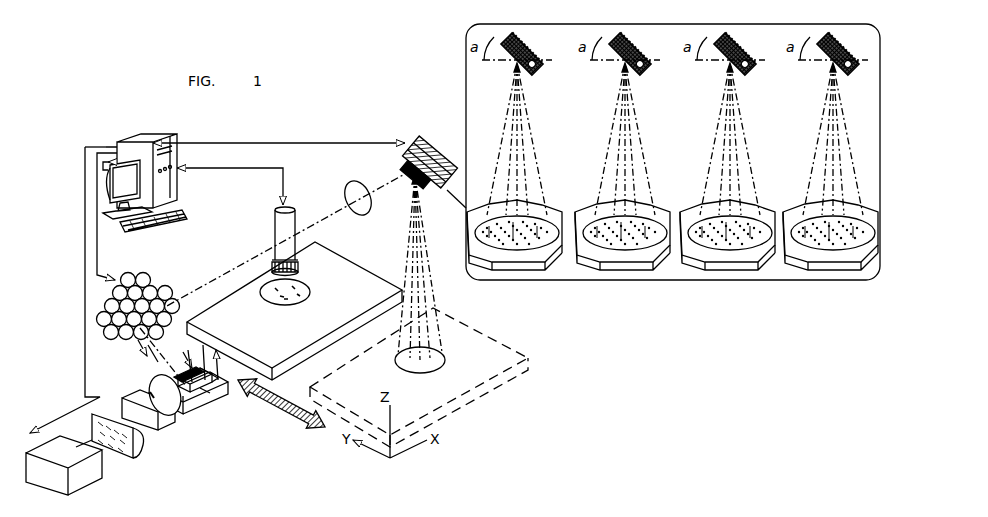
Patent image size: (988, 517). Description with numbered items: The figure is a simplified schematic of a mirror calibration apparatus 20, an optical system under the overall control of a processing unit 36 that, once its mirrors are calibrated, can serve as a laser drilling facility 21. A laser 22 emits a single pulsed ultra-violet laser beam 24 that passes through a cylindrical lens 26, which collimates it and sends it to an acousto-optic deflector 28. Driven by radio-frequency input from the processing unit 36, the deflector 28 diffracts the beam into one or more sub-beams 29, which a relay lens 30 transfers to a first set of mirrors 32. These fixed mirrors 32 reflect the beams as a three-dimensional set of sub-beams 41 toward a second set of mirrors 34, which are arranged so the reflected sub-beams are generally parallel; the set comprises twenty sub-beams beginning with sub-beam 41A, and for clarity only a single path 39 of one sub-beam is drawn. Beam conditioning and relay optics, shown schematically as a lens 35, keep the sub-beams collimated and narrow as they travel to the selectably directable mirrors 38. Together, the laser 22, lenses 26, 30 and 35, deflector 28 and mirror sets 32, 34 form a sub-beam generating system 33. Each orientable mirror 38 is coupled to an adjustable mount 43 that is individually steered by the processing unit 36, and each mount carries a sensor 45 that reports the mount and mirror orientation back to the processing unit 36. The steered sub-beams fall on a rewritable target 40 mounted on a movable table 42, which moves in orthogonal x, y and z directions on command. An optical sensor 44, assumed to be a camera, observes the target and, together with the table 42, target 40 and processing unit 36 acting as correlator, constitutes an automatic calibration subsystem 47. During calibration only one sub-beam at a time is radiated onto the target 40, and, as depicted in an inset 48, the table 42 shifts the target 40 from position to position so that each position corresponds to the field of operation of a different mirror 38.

The mirror calibration apparatus 20 is at (500, 424).
The laser drilling facility 21 is at (553, 407).
The laser 22 is at (90, 478).
The laser beam 24 is at (112, 442).
The cylindrical lens 26 is at (143, 444).
The acousto-optic deflector 28 is at (172, 425).
The sub-beams 29 is at (150, 394).
The relay lens 30 is at (162, 388).
The first set of mirrors 32 is at (215, 401).
The sub-beam generating system 33 is at (230, 438).
The second set of mirrors 34 is at (160, 273).
The lens 35 is at (352, 192).
The processing unit 36 is at (143, 141).
The selectably directable mirrors 38 is at (411, 188).
The path 39 is at (218, 276).
The rewritable target 40 is at (541, 228).
The three-dimensional set of sub-beams 41 is at (214, 383).
The sub-beam 41A is at (215, 345).
The movable table 42 is at (562, 258).
The adjustable mount 43 is at (432, 134).
The optical sensor 44 is at (276, 230).
The sensor 45 is at (400, 158).
The automatic calibration subsystem 47 is at (357, 123).
The inset 48 is at (462, 44).